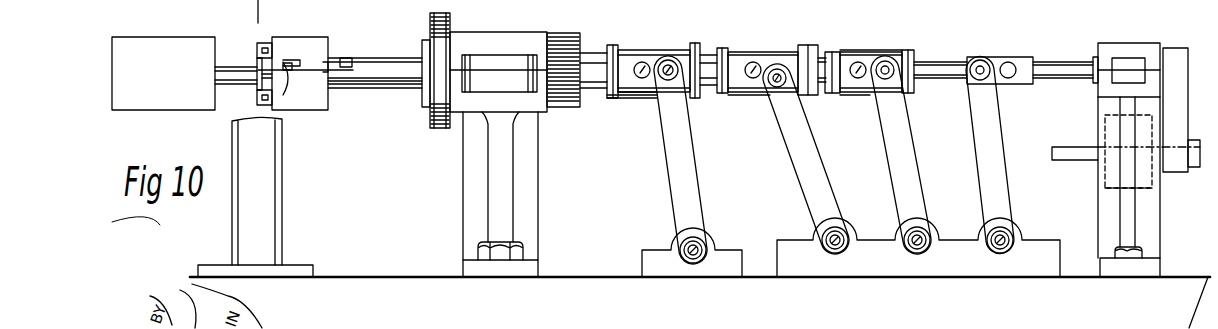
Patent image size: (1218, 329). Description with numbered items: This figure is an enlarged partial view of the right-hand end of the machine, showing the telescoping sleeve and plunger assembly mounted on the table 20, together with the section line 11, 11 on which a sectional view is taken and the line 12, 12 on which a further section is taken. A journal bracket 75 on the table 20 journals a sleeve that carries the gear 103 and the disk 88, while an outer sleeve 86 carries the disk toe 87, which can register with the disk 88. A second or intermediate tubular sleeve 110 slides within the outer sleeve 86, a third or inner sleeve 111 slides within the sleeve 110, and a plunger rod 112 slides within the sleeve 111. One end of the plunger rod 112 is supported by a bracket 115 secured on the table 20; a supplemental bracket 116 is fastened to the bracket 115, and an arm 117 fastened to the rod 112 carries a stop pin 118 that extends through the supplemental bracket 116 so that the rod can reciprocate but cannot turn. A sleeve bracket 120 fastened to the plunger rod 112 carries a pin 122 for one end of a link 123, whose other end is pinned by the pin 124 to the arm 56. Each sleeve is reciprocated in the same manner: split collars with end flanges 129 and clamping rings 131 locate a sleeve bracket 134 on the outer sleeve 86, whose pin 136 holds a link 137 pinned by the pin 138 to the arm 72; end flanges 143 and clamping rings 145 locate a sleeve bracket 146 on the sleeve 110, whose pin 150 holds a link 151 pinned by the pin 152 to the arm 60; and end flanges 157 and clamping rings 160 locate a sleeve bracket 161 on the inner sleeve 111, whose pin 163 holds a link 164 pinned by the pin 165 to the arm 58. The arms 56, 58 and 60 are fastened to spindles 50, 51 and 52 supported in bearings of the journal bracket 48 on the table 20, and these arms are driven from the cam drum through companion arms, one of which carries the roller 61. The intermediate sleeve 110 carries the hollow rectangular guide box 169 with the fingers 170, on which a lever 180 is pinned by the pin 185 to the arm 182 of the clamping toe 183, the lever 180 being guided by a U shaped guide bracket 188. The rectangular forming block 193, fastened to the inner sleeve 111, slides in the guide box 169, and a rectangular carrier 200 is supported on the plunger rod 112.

The section line 11 is at (106, 74).
The section line 12 is at (257, 14).
The table 20 is at (606, 276).
The journal bracket 48 is at (1060, 240).
The spindle 50 is at (1003, 243).
The spindle 51 is at (922, 245).
The spindle 52 is at (838, 244).
The arm 56 is at (990, 154).
The arm 58 is at (901, 155).
The arm 60 is at (806, 159).
The roller 61 is at (702, 255).
The arm 72 is at (680, 160).
The journal bracket 75 is at (467, 166).
The outer sleeve 86 is at (594, 53).
The disk toe 87 is at (428, 47).
The disk 88 is at (446, 6).
The gear 103 is at (570, 30).
The second or intermediate tubular sleeve 110 is at (712, 90).
The third or inner sleeve 111 is at (822, 56).
The plunger rod 112 is at (1079, 61).
The bracket 115 is at (1105, 117).
The supplemental bracket 116 is at (1113, 189).
The arm 117 is at (1188, 102).
The stop pin 118 is at (1060, 161).
The sleeve bracket 120 is at (1040, 58).
The pin 122 is at (1009, 80).
The link 123 is at (990, 57).
The pin 124 is at (979, 60).
The end flanges 129 is at (611, 45).
The clamping rings 131 is at (698, 43).
The sleeve bracket 134 is at (616, 97).
The pin 136 is at (642, 62).
The link 137 is at (641, 112).
The pin 138 is at (662, 23).
The end flanges 143 is at (737, 92).
The clamping rings 145 is at (720, 48).
The sleeve bracket 146 is at (750, 97).
The pin 150 is at (752, 62).
The link 151 is at (777, 68).
The pin 152 is at (775, 89).
The end flanges 157 is at (838, 53).
The clamping rings 160 is at (826, 93).
The sleeve bracket 161 is at (845, 86).
The pin 163 is at (863, 60).
The link 164 is at (883, 48).
The pin 165 is at (881, 88).
The hollow rectangular guide box 169 is at (300, 110).
The fingers 170 is at (262, 48).
The lever 180 is at (308, 71).
The arm of the clamping toe 182 is at (290, 86).
The clamping toe 183 is at (267, 80).
The pin 185 is at (283, 62).
The U shaped guide bracket 188 is at (331, 73).
The rectangular forming block 193 is at (265, 106).
The rectangular carrier 200 is at (184, 73).